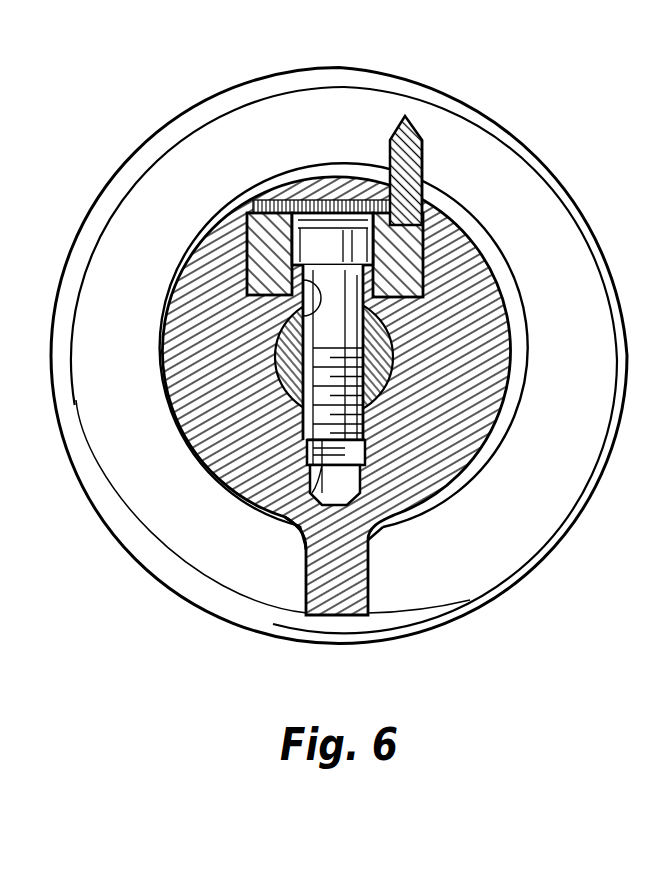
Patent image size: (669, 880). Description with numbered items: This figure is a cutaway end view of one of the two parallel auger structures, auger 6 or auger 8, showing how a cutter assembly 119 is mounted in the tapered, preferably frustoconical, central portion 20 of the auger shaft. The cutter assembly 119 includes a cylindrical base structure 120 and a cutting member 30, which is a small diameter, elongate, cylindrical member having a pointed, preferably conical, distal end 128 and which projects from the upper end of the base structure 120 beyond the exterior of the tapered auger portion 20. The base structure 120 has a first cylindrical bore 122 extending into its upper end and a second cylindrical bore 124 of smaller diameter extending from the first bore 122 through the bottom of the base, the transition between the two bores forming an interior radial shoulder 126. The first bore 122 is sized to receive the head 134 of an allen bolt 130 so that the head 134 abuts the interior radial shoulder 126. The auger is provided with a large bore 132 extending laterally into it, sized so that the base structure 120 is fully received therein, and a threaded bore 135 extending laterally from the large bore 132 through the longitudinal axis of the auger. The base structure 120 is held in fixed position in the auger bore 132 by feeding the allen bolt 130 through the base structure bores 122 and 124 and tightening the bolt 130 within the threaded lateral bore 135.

The auger 6 is at (339, 353).
The auger 8 is at (190, 107).
The central portion 20 is at (208, 322).
The cutting member 30 is at (423, 153).
The cutter assembly 119 is at (425, 272).
The cylindrical base structure 120 is at (247, 252).
The first cylindrical bore 122 is at (305, 205).
The second cylindrical bore 124 is at (278, 357).
The interior radial shoulder 126 is at (425, 222).
The pointed distal end 128 is at (420, 128).
The allen bolt 130 is at (442, 306).
The large bore 132 is at (400, 298).
The head 134 is at (331, 237).
The threaded bore 135 is at (285, 512).